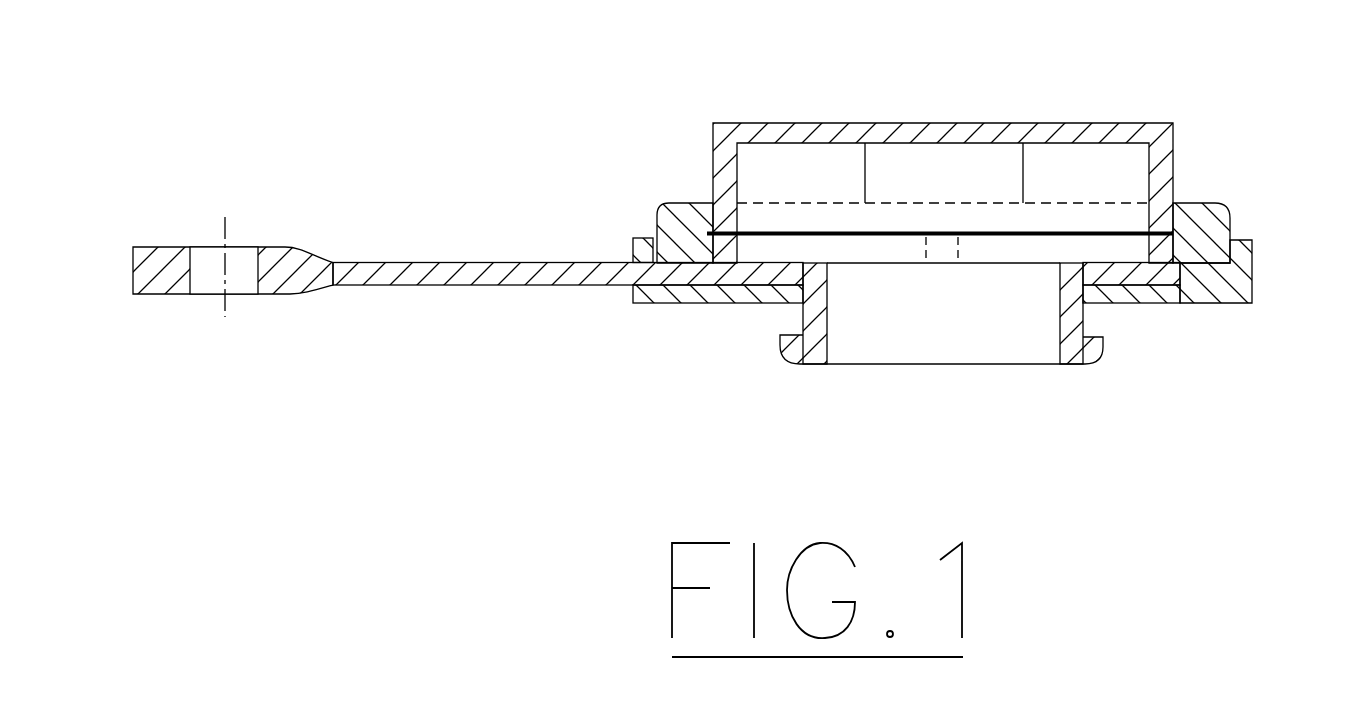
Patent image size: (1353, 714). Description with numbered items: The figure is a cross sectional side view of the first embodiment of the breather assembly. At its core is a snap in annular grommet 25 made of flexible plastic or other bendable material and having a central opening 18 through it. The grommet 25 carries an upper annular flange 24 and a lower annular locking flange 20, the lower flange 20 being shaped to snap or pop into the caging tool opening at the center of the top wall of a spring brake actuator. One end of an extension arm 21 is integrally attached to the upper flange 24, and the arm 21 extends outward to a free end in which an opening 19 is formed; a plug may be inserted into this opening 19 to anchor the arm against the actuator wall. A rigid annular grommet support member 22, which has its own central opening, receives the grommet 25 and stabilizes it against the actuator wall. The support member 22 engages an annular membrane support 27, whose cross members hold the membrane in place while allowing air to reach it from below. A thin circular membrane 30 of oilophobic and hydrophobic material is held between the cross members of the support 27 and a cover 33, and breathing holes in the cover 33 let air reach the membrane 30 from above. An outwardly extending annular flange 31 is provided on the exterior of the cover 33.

The central opening 18 is at (930, 343).
The opening 19 is at (236, 247).
The lower annular locking flange 20 is at (780, 343).
The extension arm 21 is at (452, 270).
The grommet support member 22 is at (680, 303).
The upper annular flange 24 is at (1172, 303).
The grommet 25 is at (1062, 323).
The membrane support 27 is at (1230, 229).
The membrane 30 is at (1083, 233).
The annular flange 31 is at (681, 203).
The cover 33 is at (1156, 123).